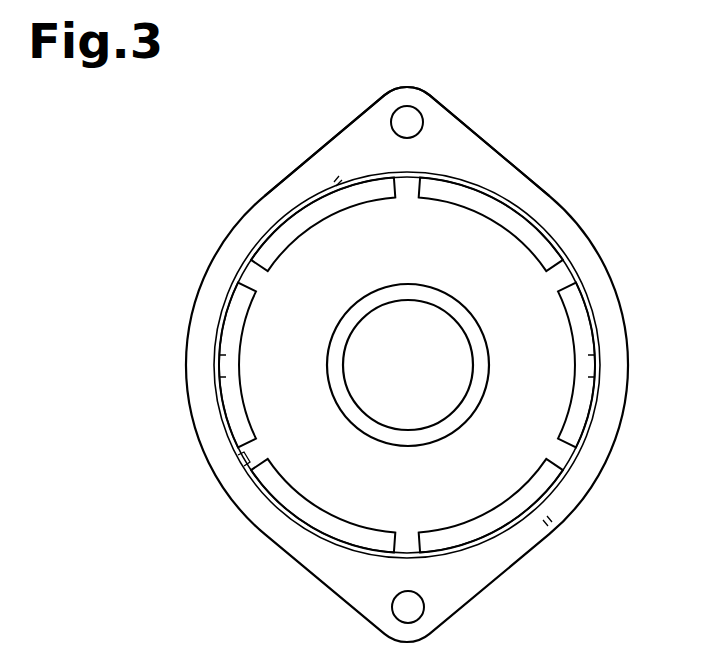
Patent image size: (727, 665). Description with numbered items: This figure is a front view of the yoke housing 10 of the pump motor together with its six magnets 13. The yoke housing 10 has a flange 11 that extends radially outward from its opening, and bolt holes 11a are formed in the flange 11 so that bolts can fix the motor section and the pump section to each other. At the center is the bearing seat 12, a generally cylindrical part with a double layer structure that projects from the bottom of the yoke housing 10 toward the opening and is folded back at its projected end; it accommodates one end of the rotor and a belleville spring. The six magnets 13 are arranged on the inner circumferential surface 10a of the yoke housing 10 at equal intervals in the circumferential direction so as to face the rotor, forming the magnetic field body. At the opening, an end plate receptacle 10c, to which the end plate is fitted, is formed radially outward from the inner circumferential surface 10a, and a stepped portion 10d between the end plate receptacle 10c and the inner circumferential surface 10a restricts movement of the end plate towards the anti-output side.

The yoke housing 10 is at (276, 188).
The inner circumferential surface 10a is at (246, 472).
The end plate receptacle 10c is at (578, 300).
The stepped portion 10d is at (340, 184).
The flange 11 is at (466, 126).
The bolt holes 11a is at (412, 118).
The bearing seat 12 is at (440, 330).
The magnets 13 is at (272, 246).